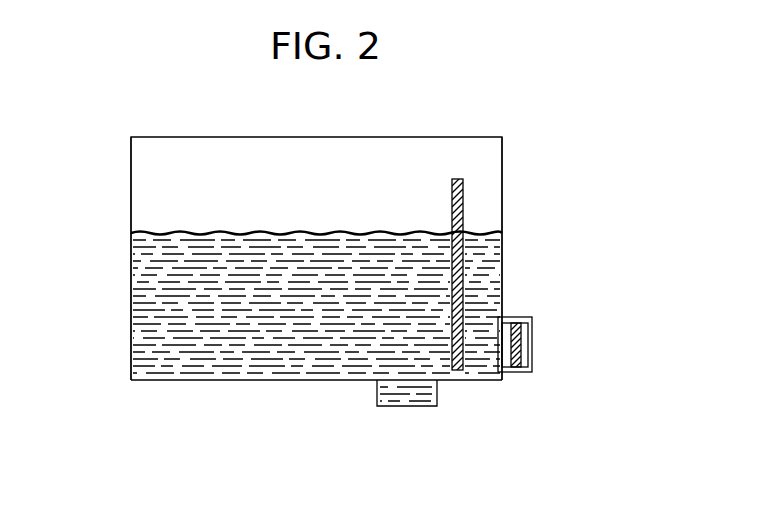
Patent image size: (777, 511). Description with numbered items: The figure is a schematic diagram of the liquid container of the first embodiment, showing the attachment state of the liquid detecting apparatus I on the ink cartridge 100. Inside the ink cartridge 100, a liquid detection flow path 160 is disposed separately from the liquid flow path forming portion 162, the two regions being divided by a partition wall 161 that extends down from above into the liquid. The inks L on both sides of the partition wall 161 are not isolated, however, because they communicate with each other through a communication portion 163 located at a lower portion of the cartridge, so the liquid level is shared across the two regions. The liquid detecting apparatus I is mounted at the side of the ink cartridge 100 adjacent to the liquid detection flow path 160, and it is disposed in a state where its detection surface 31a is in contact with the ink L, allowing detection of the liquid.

The ink cartridge 100 is at (573, 158).
The liquid detection flow path 160 is at (493, 252).
The partition wall 161 is at (463, 198).
The liquid flow path forming portion 162 is at (130, 311).
The communication portion 163 is at (455, 378).
The ink L is at (305, 353).
The liquid detecting apparatus I is at (547, 335).
The detection surface 31a is at (496, 347).